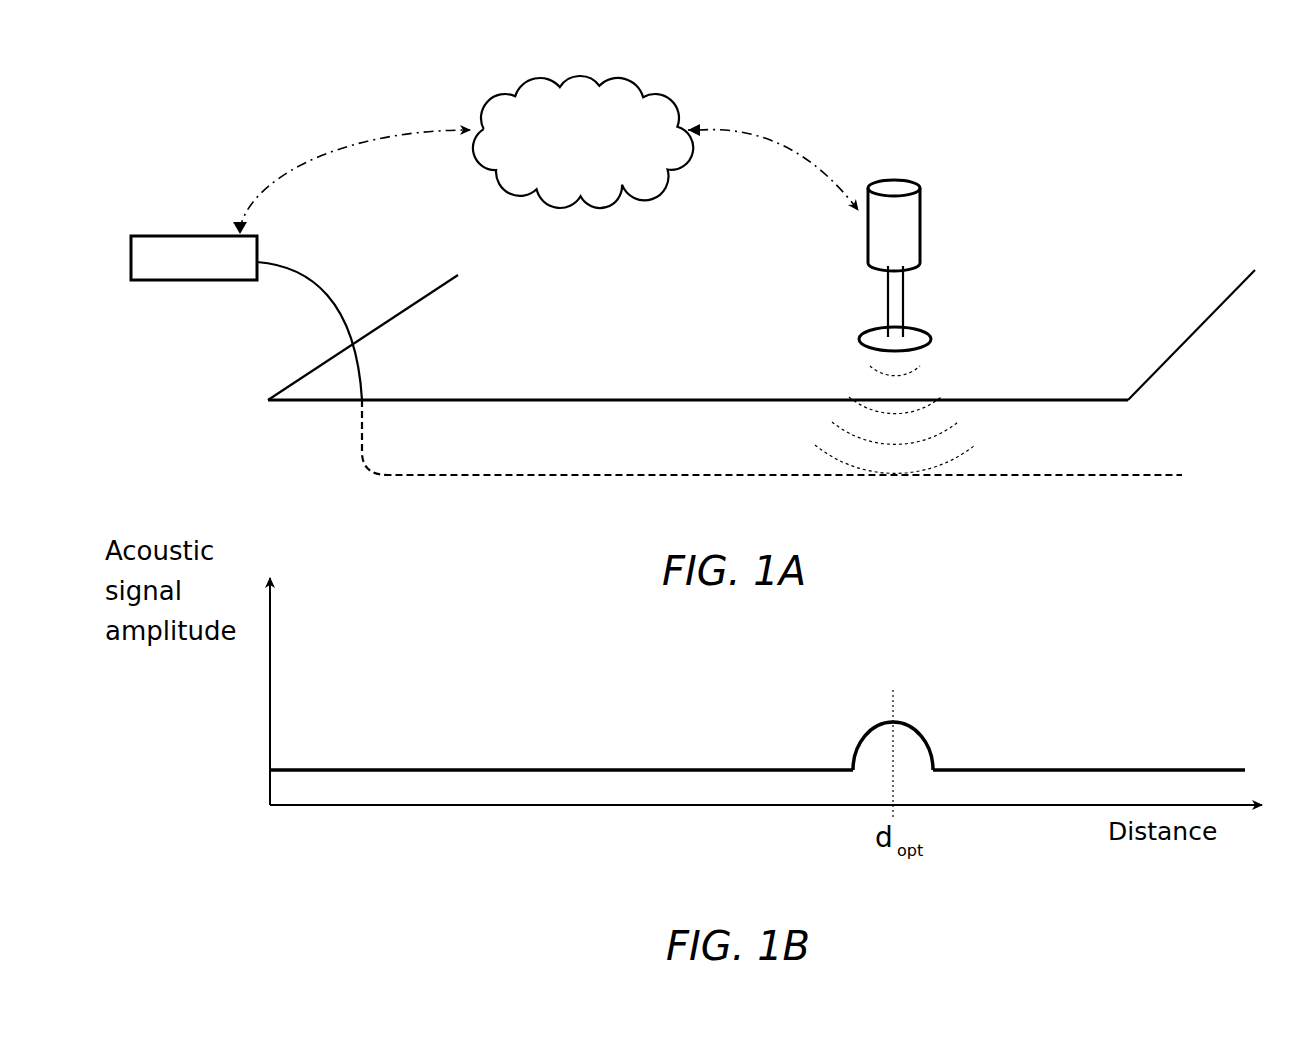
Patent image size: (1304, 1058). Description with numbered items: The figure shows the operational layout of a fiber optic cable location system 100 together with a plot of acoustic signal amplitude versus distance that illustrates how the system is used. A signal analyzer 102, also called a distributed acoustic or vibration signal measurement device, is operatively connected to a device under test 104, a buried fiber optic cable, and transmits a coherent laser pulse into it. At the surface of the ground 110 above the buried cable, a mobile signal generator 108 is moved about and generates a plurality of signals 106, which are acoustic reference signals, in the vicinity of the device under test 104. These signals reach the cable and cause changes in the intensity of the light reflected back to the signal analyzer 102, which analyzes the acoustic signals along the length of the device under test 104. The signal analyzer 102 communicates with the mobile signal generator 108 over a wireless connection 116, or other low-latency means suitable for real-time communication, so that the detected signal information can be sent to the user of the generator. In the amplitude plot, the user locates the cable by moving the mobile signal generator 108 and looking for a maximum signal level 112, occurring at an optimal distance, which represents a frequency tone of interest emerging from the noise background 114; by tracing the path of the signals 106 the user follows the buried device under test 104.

In FIG. 1A, the system 100 is at (176, 120).
In FIG. 1A, the signal analyzer 102 is at (194, 258).
In FIG. 1A, the device under test 104 is at (546, 480).
In FIG. 1A, the plurality of signals 106 is at (856, 369).
In FIG. 1A, the mobile signal generator 108 is at (905, 177).
In FIG. 1A, the ground 110 is at (423, 296).
In FIG. 1B, the maximum signal level 112 is at (876, 721).
In FIG. 1B, the noise background 114 is at (580, 766).
In FIG. 1A, the wireless connection 116 is at (554, 86).